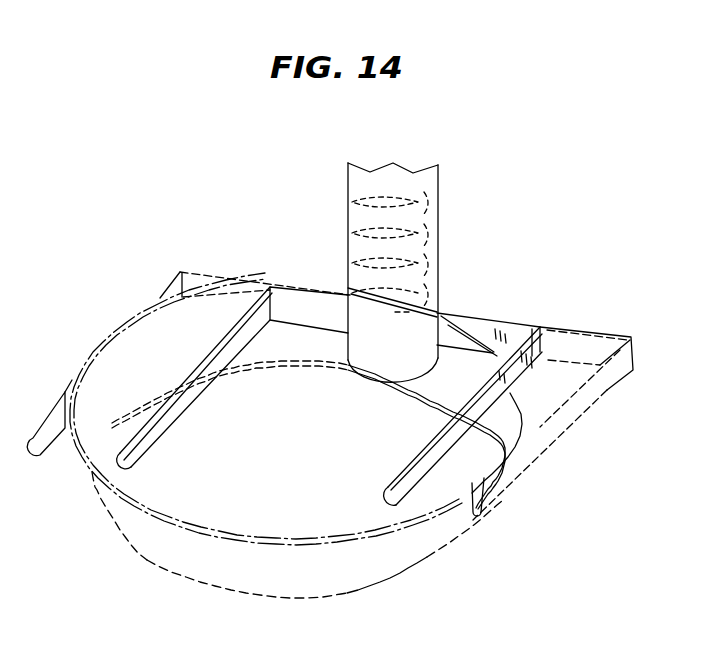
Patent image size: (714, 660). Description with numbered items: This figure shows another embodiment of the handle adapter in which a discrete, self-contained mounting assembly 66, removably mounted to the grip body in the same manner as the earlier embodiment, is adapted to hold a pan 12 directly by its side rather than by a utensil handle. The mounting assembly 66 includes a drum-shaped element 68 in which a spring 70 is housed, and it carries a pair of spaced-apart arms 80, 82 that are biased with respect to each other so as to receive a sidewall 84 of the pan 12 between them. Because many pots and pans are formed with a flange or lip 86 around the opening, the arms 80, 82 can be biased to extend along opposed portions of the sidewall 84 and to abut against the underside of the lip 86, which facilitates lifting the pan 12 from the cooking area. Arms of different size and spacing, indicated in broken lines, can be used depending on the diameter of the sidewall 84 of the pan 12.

The pan 12 is at (147, 562).
The sidewall 84 is at (343, 582).
The lip 86 is at (83, 477).
The arm 82 is at (187, 373).
The arm 80 is at (404, 465).
The drum-shaped element 68 is at (438, 304).
The mounting assembly 66 is at (438, 182).
The spring 70 is at (345, 204).